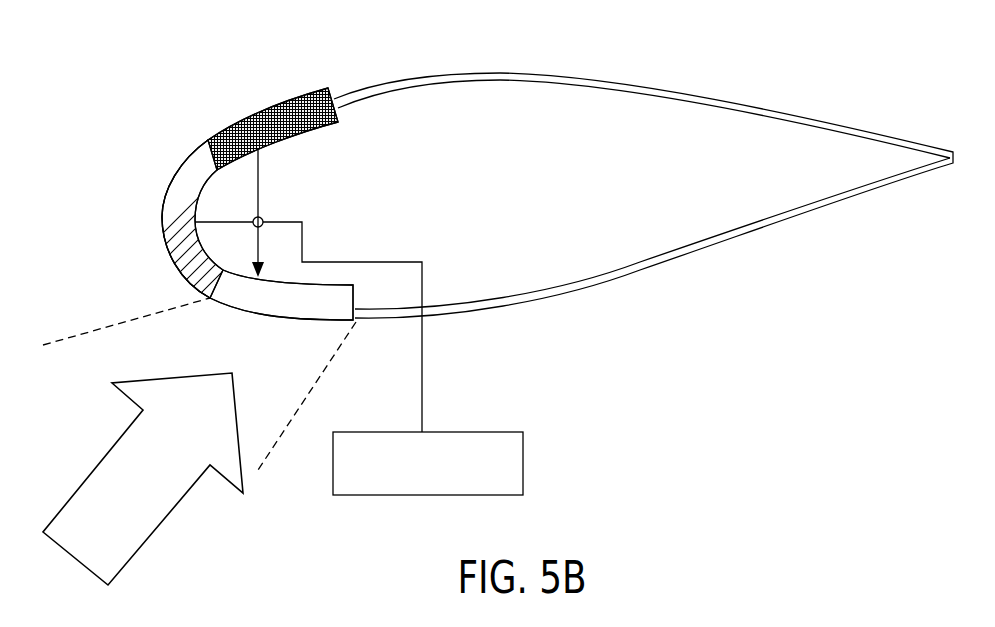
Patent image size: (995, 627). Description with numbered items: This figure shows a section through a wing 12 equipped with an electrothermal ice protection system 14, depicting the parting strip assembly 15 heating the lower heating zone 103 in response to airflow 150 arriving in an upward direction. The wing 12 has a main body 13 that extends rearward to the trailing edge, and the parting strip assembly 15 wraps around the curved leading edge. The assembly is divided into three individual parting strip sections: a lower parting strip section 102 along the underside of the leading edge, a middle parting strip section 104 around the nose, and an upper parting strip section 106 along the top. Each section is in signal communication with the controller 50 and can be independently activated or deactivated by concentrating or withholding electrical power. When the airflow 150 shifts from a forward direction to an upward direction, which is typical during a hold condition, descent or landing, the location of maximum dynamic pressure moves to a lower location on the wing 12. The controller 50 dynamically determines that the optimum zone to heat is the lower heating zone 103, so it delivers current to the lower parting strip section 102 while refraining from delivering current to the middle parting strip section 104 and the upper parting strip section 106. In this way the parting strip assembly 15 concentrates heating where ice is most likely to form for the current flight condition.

The wing 12 is at (741, 94).
The main body 13 is at (797, 142).
The electrothermal ice protection system 14 is at (150, 128).
The parting strip assembly 15 is at (148, 247).
The controller 50 is at (523, 462).
The lower parting strip section 102 is at (295, 308).
The lower heating zone 103 is at (94, 331).
The middle parting strip section 104 is at (178, 193).
The upper parting strip section 106 is at (252, 122).
The airflow 150 is at (163, 522).